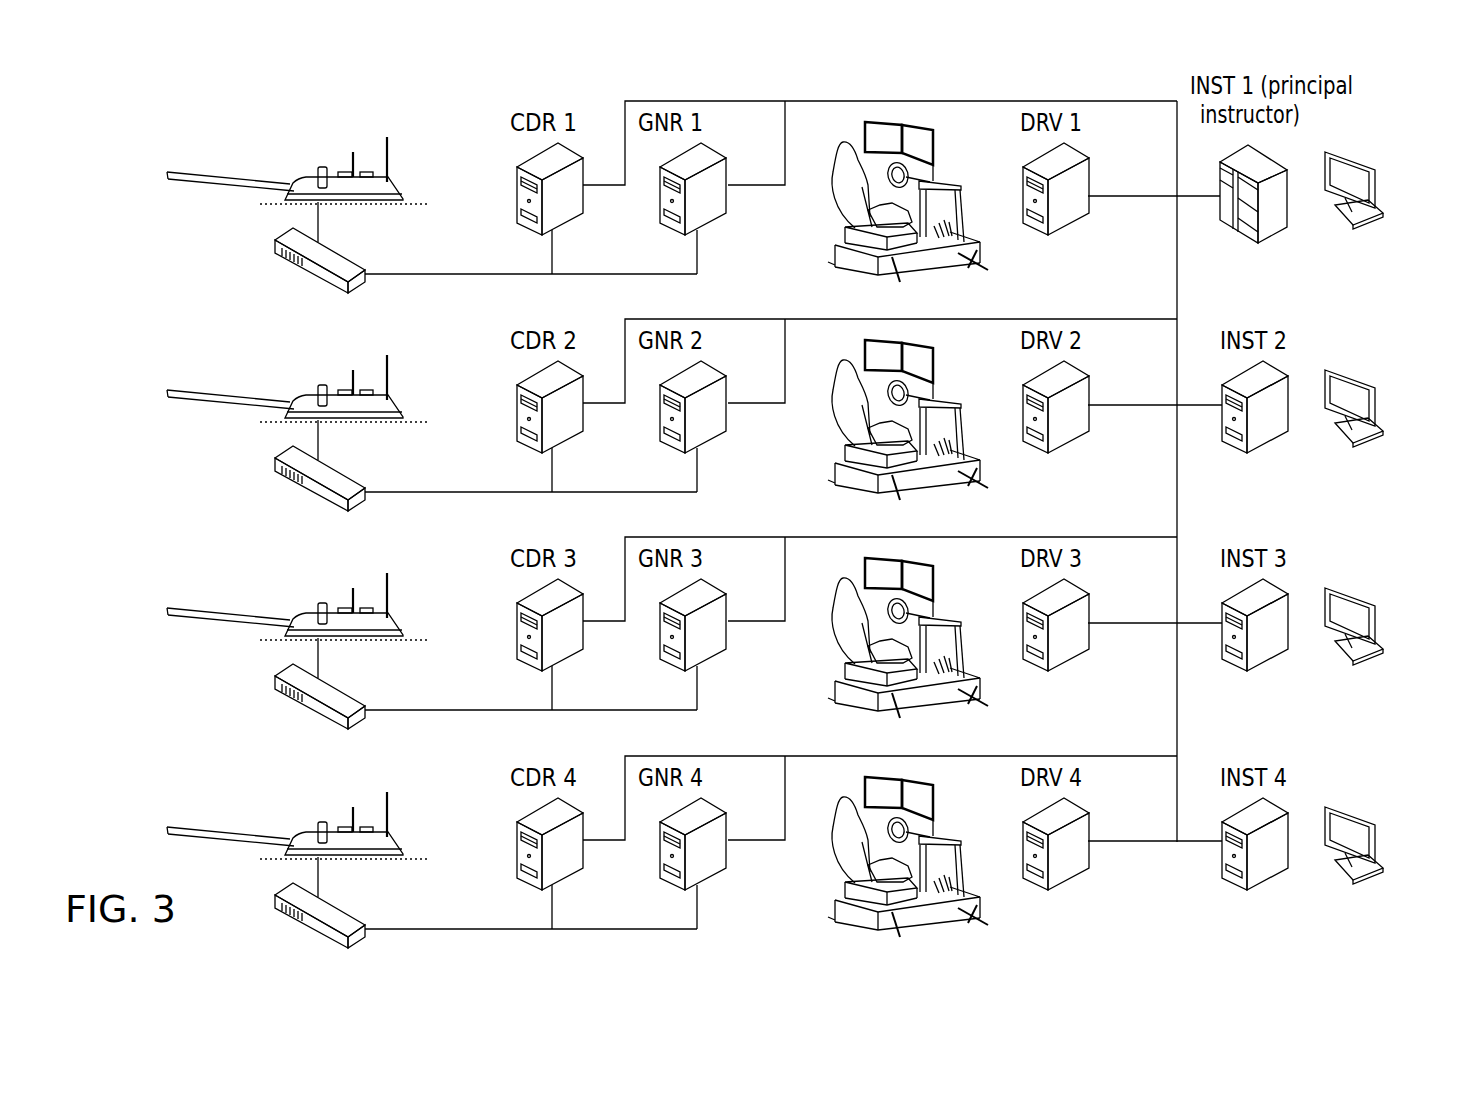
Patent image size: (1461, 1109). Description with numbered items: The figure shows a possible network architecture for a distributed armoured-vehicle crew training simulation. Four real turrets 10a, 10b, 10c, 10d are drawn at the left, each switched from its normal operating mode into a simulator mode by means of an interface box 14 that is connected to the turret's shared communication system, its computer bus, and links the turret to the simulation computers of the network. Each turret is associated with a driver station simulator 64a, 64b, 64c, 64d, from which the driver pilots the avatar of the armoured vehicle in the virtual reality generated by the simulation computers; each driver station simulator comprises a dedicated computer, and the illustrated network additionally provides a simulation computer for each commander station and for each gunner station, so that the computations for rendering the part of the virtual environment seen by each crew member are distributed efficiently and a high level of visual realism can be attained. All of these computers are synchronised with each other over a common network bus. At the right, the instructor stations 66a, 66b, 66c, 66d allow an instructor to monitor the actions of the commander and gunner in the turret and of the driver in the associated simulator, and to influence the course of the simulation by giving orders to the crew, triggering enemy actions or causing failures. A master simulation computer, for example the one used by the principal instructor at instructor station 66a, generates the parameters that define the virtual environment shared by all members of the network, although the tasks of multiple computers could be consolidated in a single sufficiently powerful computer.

The turret 10a is at (298, 128).
The turret 10b is at (298, 346).
The turret 10c is at (298, 564).
The turret 10d is at (298, 783).
The interface box 14 is at (333, 250).
The driver station simulator 64a is at (980, 250).
The driver station simulator 64b is at (980, 468).
The driver station simulator 64c is at (980, 686).
The driver station simulator 64d is at (980, 905).
The instructor station 66a is at (1367, 245).
The instructor station 66b is at (1367, 463).
The instructor station 66c is at (1366, 681).
The instructor station 66d is at (1333, 905).